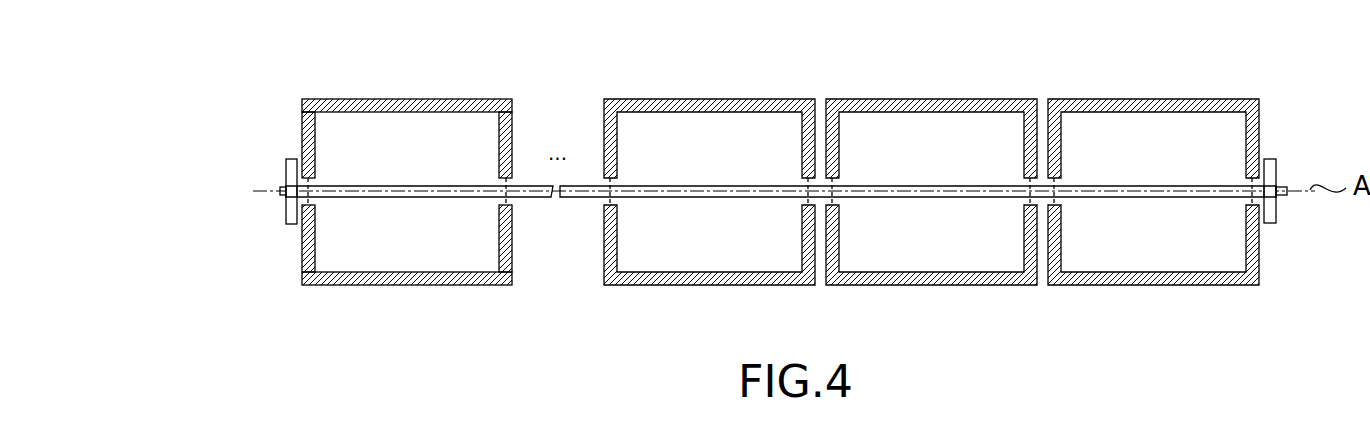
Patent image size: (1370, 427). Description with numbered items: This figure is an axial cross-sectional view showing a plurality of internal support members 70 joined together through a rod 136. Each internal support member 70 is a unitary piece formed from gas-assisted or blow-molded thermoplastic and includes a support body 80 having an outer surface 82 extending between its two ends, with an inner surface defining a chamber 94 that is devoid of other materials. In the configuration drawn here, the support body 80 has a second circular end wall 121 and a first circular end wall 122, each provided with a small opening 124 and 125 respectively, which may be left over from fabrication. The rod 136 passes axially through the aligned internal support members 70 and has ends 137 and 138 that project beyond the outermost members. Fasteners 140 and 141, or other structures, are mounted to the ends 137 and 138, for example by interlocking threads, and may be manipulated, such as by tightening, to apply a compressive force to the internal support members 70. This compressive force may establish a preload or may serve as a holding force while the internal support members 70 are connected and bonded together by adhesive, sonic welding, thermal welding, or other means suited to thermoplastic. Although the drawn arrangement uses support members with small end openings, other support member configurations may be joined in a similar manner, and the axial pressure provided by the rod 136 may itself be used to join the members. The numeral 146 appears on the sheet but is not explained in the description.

The internal support member 70 is at (868, 320).
The support body 80 is at (396, 193).
The outer surface 82 is at (304, 96).
The chamber 94 is at (415, 141).
The second circular end wall 121 is at (521, 258).
The first circular end wall 122 is at (294, 243).
The small opening 124 is at (520, 122).
The small opening 125 is at (286, 189).
The rod 136 is at (575, 198).
The end 137 is at (281, 192).
The end 138 is at (1280, 178).
The fastener 140 is at (291, 160).
The fastener 141 is at (1268, 224).
The element 146 is at (625, 421).